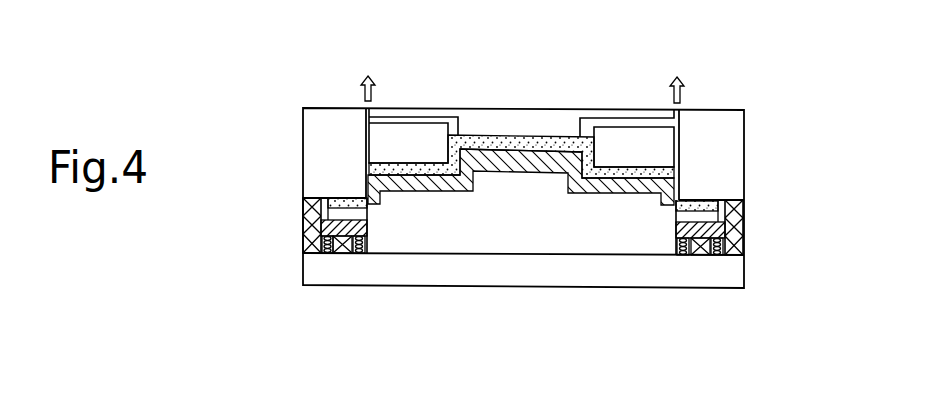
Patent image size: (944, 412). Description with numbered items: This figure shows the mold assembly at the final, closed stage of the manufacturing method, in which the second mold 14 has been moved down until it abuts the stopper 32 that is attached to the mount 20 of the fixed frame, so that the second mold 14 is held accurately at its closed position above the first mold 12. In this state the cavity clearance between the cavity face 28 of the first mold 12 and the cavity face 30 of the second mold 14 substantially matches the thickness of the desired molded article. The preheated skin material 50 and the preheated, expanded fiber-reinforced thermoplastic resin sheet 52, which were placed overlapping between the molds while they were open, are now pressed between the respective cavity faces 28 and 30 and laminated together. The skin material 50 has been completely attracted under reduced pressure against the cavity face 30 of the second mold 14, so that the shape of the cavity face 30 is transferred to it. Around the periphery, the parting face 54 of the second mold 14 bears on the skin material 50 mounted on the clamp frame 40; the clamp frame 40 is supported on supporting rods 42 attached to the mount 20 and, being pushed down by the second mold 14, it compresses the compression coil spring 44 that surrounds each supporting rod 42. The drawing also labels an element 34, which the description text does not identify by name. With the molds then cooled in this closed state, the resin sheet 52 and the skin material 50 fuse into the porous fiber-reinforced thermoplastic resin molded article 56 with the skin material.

The first mold 12 is at (625, 243).
The second mold 14 is at (537, 110).
The mount 20 is at (453, 272).
The cavity face of the first mold 28 is at (512, 172).
The cavity face of the second mold 30 is at (508, 150).
The stopper 32 is at (312, 230).
The first electrode 34 is at (391, 117).
The clamp frame 40 is at (330, 206).
The supporting rod 42 is at (337, 253).
The compression coil spring 44 is at (322, 245).
The skin material 50 is at (660, 157).
The fiber-reinforced thermoplastic resin sheet 52 is at (668, 185).
The parting face 54 is at (730, 212).
The fiber-reinforced thermoplastic resin molded article 56 is at (372, 188).